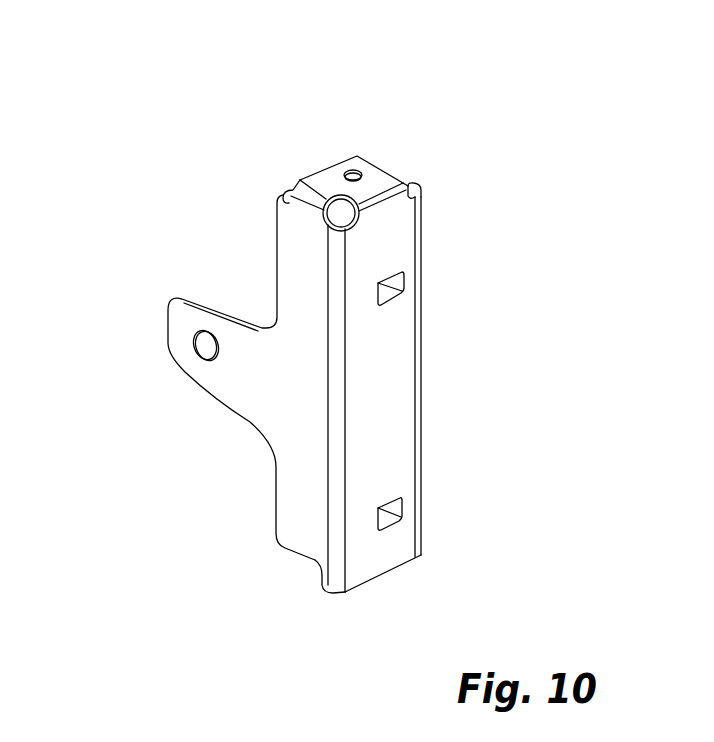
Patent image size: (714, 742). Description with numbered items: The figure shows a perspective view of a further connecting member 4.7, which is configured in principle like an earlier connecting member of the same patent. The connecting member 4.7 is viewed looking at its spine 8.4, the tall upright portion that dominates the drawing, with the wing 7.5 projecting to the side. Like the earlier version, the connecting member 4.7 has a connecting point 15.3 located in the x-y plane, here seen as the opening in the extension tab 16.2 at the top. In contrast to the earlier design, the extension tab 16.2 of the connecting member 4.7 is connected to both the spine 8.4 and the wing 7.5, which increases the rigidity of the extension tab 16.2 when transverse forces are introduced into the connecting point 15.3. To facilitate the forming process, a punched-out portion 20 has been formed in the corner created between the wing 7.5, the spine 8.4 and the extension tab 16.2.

The connecting member 4.7 is at (299, 310).
The wing 7.5 is at (270, 372).
The spine 8.4 is at (390, 385).
The connecting point 15.3 is at (357, 172).
The extension tab 16.2 is at (414, 119).
The punched-out portion 20 is at (347, 219).